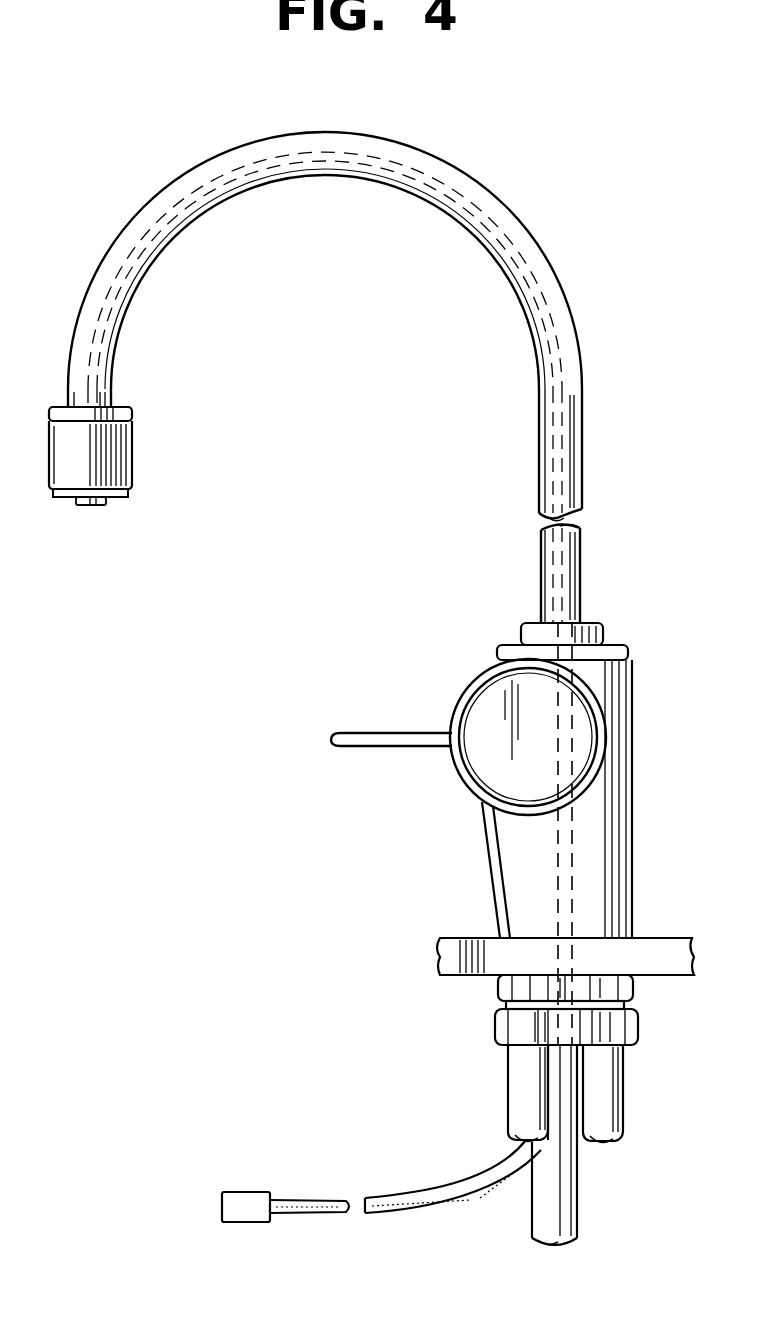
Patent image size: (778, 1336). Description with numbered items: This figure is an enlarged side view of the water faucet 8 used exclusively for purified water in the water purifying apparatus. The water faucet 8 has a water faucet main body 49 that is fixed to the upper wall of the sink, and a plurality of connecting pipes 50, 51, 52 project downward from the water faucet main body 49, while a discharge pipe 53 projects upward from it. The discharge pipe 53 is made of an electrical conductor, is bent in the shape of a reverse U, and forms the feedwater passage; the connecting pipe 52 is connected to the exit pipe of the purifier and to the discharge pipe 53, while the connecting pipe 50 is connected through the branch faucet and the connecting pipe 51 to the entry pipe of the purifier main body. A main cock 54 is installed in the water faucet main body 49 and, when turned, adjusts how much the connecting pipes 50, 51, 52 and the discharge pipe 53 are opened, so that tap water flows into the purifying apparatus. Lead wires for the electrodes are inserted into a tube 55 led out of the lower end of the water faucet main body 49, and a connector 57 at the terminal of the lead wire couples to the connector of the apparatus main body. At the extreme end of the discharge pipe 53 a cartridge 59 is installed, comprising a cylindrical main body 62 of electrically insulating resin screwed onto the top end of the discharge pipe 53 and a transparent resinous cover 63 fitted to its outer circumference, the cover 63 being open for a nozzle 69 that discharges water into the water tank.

The water faucet 8 is at (325, 360).
The discharge pipe 53 is at (417, 157).
The cartridge 59 is at (124, 492).
The cylindrical main body 62 is at (126, 414).
The transparent resinous cover 63 is at (125, 453).
The nozzle 69 is at (92, 506).
The water faucet main body 49 is at (502, 834).
The main cock 54 is at (382, 732).
The connecting pipe 50 is at (578, 1197).
The connecting pipe 51 is at (620, 1080).
The connecting pipe 52 is at (518, 1093).
The tube 55 is at (433, 1195).
The connector 57 is at (248, 1195).